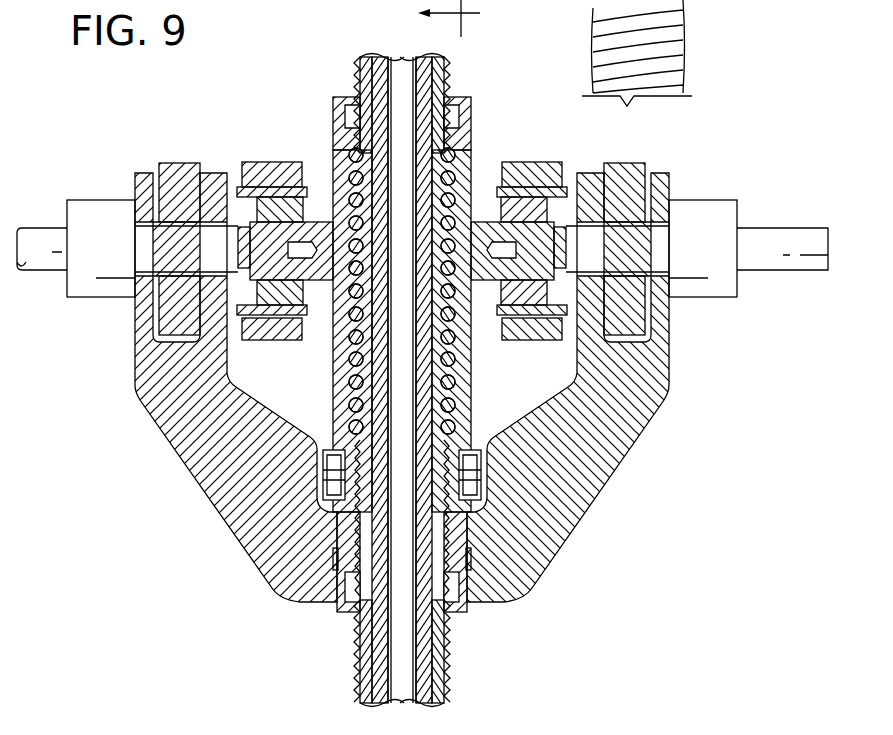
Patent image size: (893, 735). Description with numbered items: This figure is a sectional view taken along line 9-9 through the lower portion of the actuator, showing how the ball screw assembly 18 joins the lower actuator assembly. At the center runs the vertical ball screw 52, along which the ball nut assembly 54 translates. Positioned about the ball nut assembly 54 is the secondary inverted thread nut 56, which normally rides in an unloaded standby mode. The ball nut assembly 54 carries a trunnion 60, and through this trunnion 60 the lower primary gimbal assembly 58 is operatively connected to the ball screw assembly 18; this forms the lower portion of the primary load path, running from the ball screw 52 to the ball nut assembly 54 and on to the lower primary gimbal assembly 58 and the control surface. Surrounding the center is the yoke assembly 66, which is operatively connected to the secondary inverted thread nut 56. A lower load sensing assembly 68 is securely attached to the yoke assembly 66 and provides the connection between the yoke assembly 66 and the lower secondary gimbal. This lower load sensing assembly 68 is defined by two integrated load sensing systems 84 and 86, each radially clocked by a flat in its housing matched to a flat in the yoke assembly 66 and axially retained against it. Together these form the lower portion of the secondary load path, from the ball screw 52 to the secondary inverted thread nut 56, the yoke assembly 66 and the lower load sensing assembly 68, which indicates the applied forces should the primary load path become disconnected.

The section line 9 is at (462, 18).
The ball screw assembly 18 is at (345, 660).
The ball screw 52 is at (448, 666).
The ball nut assembly 54 is at (478, 375).
The secondary inverted thread nut 56 is at (477, 558).
The lower primary gimbal assembly 58 is at (268, 152).
The trunnion 60 is at (476, 160).
The yoke assembly 66 is at (617, 485).
The lower load sensing assembly 68 is at (93, 196).
The integrated load sensing system 84 is at (88, 280).
The integrated load sensing system 86 is at (725, 283).